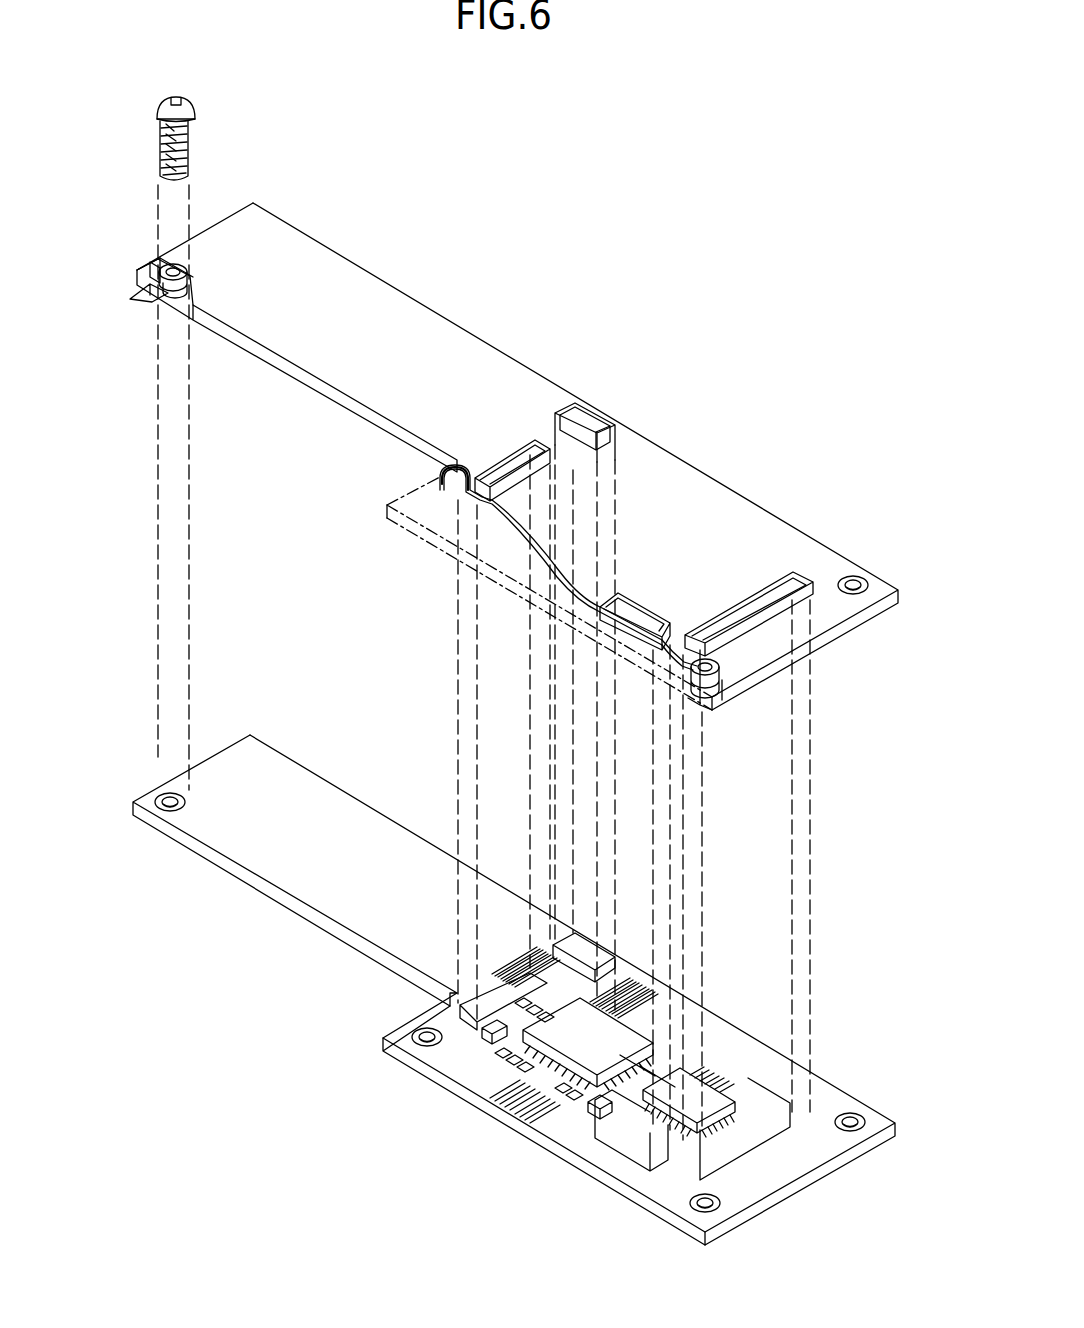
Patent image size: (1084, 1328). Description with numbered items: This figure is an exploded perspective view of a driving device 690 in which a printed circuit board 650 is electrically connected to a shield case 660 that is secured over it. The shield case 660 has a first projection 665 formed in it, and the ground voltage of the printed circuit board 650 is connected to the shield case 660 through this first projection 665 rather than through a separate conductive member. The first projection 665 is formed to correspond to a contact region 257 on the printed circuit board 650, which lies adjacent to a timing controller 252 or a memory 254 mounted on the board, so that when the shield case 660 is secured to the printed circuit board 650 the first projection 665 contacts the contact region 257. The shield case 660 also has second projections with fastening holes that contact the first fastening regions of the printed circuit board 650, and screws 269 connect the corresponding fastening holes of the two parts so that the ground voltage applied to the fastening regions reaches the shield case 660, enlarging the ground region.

The driving device 690 is at (630, 292).
The screw 269 is at (197, 106).
The shield case 660 is at (703, 492).
The first projection 665 is at (460, 487).
The contact region 257 is at (500, 998).
The printed circuit board 650 is at (340, 915).
The timing controller 252 is at (650, 1036).
The memory 254 is at (755, 1100).